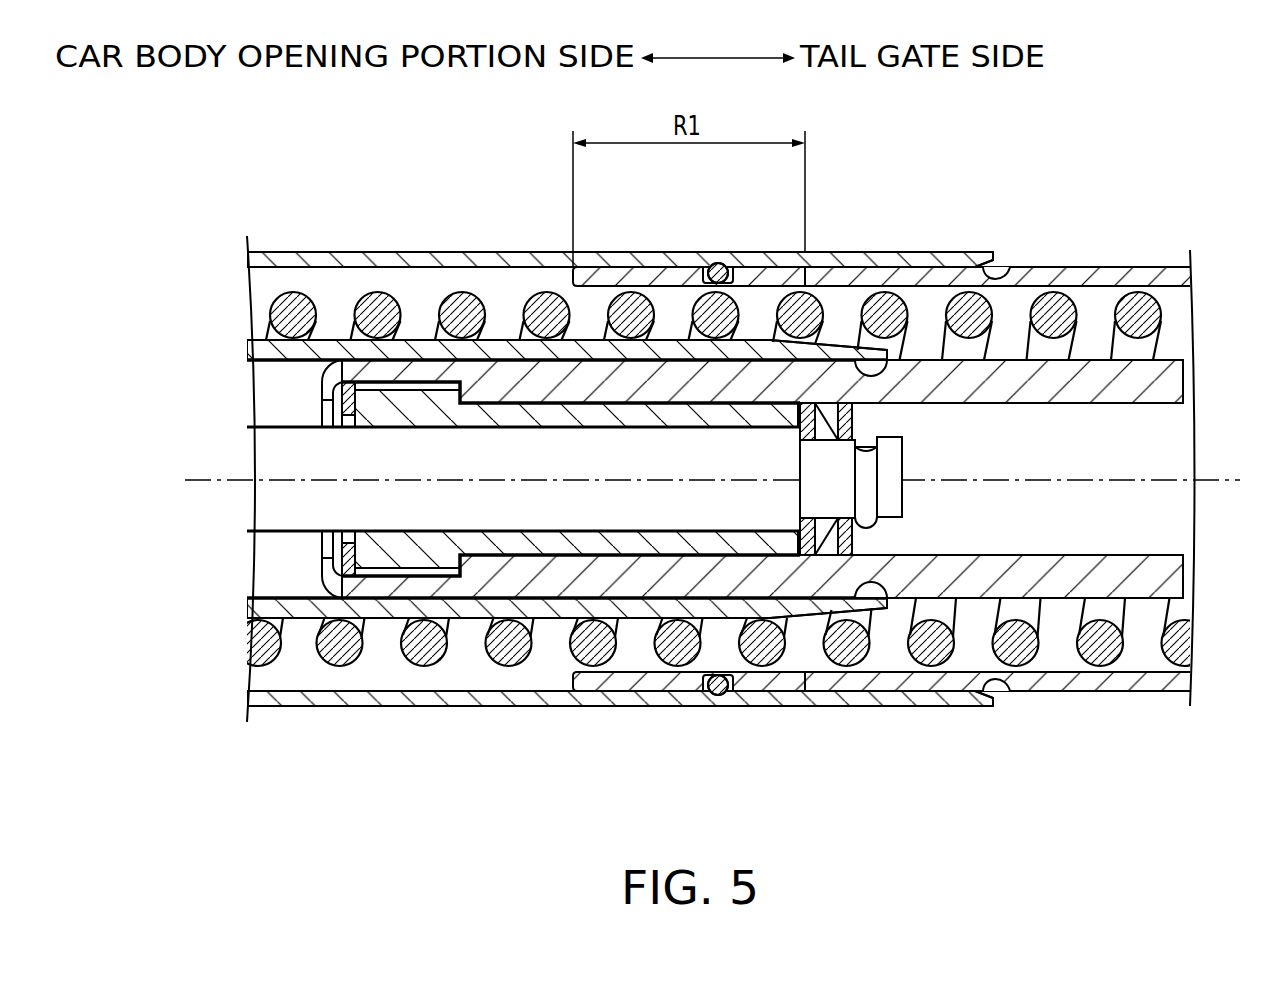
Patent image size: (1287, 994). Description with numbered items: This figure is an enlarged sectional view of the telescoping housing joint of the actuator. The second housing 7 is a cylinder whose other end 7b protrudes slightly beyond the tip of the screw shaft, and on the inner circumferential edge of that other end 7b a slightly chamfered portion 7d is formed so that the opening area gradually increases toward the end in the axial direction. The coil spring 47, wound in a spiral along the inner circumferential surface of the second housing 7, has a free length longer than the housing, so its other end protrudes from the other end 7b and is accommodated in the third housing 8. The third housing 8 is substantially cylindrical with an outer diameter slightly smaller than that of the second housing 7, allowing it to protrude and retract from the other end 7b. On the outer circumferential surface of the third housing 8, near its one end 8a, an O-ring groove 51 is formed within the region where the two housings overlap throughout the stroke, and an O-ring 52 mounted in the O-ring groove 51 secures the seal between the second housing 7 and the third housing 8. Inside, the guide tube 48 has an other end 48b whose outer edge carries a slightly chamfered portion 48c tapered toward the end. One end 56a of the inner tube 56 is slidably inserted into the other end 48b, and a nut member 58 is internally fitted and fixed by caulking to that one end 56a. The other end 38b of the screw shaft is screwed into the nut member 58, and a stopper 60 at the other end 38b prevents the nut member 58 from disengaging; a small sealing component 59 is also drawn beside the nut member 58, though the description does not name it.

The second housing 7 is at (481, 252).
The other end of second housing 7b is at (943, 252).
The chamfered portion 7d is at (1000, 276).
The third housing 8 is at (1128, 267).
The one end of third housing 8a is at (613, 268).
The other end of screw shaft 38b is at (718, 532).
The coil spring 47 is at (511, 665).
The guide tube 48 is at (332, 345).
The other end of guide tube 48b is at (873, 380).
The chamfered portion 48c is at (840, 340).
The O-ring groove 51 is at (728, 266).
The O-ring 52 is at (715, 264).
The inner tube 56 is at (1065, 575).
The one end of inner tube 56a is at (413, 377).
The nut member 58 is at (628, 558).
The seal 59 is at (348, 576).
The stopper 60 is at (843, 545).